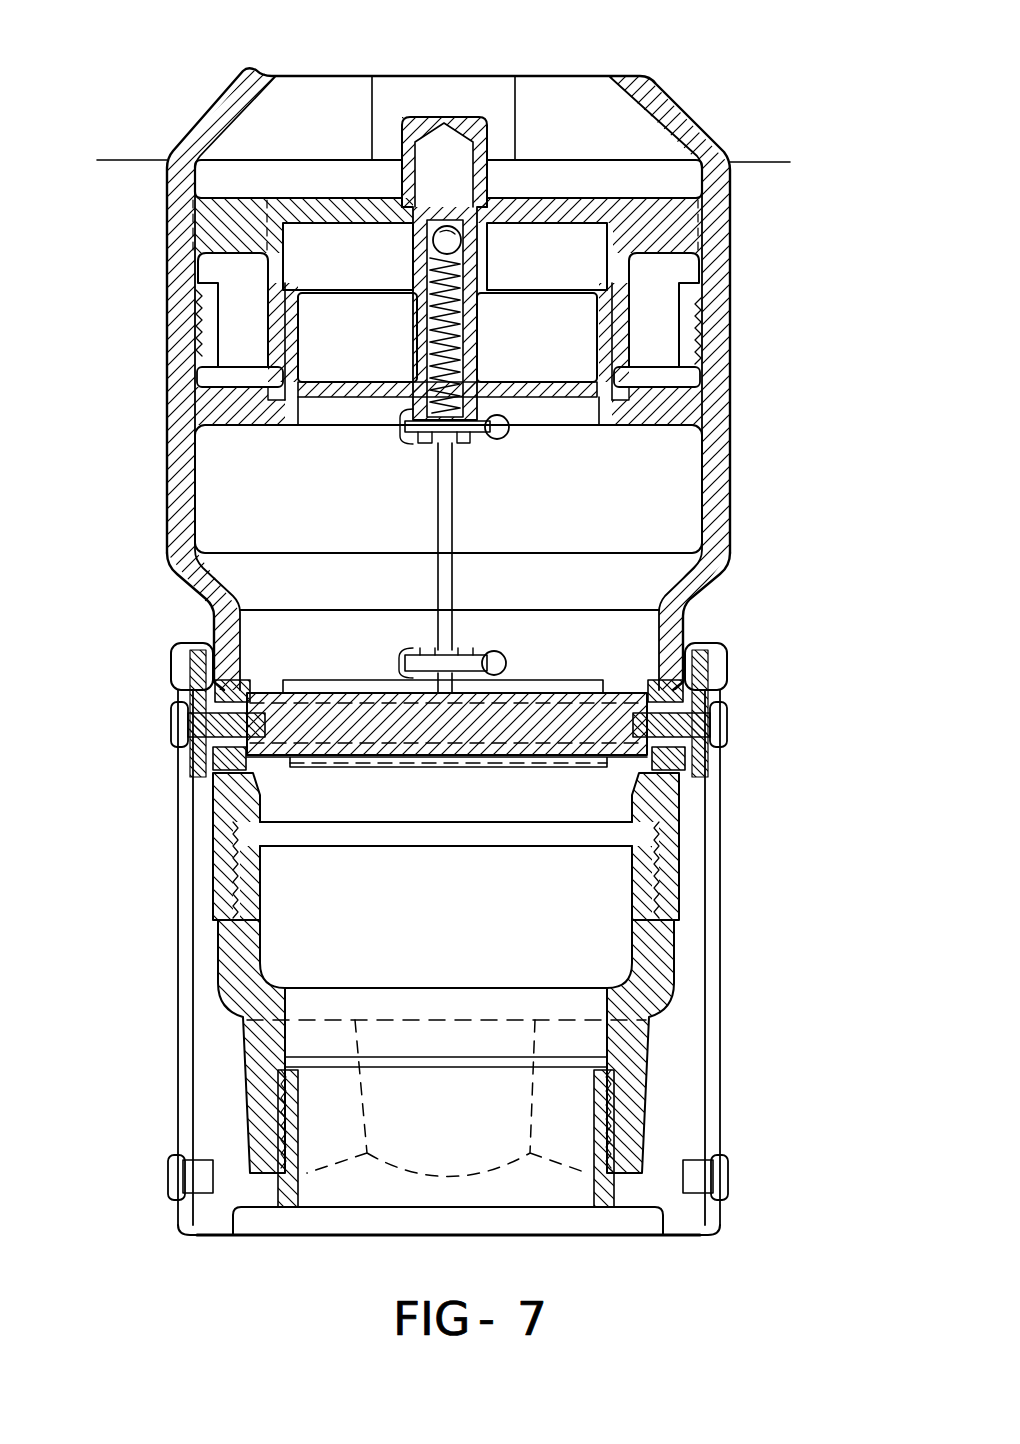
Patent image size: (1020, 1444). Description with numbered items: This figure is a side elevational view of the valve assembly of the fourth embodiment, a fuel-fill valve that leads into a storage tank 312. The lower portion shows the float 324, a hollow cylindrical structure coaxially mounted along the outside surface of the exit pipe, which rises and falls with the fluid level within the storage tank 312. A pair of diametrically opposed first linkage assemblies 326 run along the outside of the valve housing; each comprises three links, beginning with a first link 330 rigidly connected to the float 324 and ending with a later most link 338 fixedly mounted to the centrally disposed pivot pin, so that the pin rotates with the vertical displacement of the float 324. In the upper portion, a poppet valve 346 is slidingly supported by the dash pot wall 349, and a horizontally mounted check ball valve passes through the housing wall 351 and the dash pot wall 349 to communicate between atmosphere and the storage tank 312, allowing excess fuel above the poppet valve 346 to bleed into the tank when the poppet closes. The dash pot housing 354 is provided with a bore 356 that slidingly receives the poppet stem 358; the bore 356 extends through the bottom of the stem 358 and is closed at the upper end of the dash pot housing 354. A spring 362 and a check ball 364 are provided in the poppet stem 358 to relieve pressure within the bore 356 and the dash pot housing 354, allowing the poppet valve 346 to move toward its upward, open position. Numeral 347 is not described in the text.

The storage tank 312 is at (752, 161).
The housing wall 351 is at (730, 222).
The dash pot housing 354 is at (497, 213).
The poppet stem 358 is at (480, 317).
The check ball 364 is at (449, 238).
The bore 356 is at (440, 311).
The spring 362 is at (470, 337).
The dash pot wall 349 is at (630, 303).
The poppet valve 346 is at (617, 357).
The chamber 347 is at (296, 402).
The later most link 338 is at (713, 690).
The first linkage assembly 326 is at (177, 921).
The float 324 is at (655, 1208).
The first link 330 is at (708, 1223).